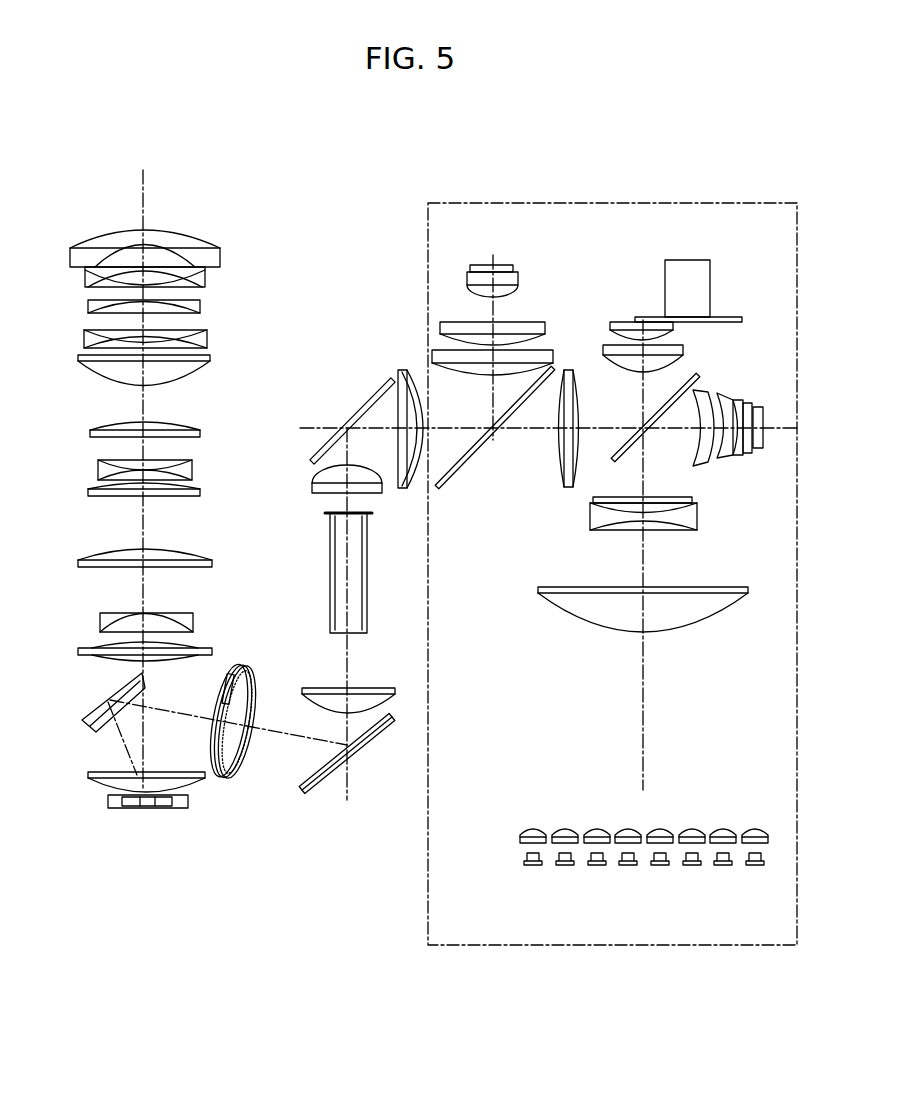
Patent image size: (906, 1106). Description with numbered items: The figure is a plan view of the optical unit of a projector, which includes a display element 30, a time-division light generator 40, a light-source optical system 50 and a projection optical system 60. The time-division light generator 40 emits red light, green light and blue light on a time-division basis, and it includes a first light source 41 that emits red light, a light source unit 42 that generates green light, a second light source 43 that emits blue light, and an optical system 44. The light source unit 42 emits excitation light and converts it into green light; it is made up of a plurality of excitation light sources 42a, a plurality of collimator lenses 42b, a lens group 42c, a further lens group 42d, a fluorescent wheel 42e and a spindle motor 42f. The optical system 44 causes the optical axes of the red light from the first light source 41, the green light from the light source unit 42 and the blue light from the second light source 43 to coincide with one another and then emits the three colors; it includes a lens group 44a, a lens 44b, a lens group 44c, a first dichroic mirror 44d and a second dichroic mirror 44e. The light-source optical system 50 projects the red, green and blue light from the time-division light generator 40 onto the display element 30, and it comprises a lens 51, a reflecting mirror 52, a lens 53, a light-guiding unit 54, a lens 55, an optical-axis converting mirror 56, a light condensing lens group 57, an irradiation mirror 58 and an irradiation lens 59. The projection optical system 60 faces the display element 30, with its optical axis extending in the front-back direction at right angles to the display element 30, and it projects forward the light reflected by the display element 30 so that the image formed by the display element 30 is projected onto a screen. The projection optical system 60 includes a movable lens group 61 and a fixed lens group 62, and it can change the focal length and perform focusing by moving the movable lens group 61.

The display element 30 is at (135, 800).
The time-division light generator 40 is at (623, 203).
The first light source 41 is at (497, 265).
The light source unit 42 is at (512, 725).
The excitation light sources 42a is at (628, 865).
The collimator lenses 42b is at (628, 828).
The lens group 42c is at (749, 497).
The lens group 42d is at (606, 370).
The fluorescent wheel 42e is at (648, 315).
The spindle motor 42f is at (690, 258).
The second light source 43 is at (758, 407).
The optical system 44 is at (507, 508).
The lens group 44a is at (693, 466).
The lens 44b is at (568, 492).
The lens group 44c is at (552, 372).
The first dichroic mirror 44d is at (698, 373).
The second dichroic mirror 44e is at (483, 443).
The light-source optical system 50 is at (288, 800).
The lens 51 is at (402, 367).
The reflecting mirror 52 is at (320, 452).
The lens 53 is at (312, 484).
The light-guiding unit 54 is at (363, 575).
The lens 55 is at (377, 685).
The optical-axis converting mirror 56 is at (363, 748).
The light condensing lens group 57 is at (248, 788).
The irradiation mirror 58 is at (82, 718).
The irradiation lens 59 is at (98, 783).
The projection optical system 60 is at (58, 222).
The movable lens group 61 is at (225, 333).
The fixed lens group 62 is at (210, 611).